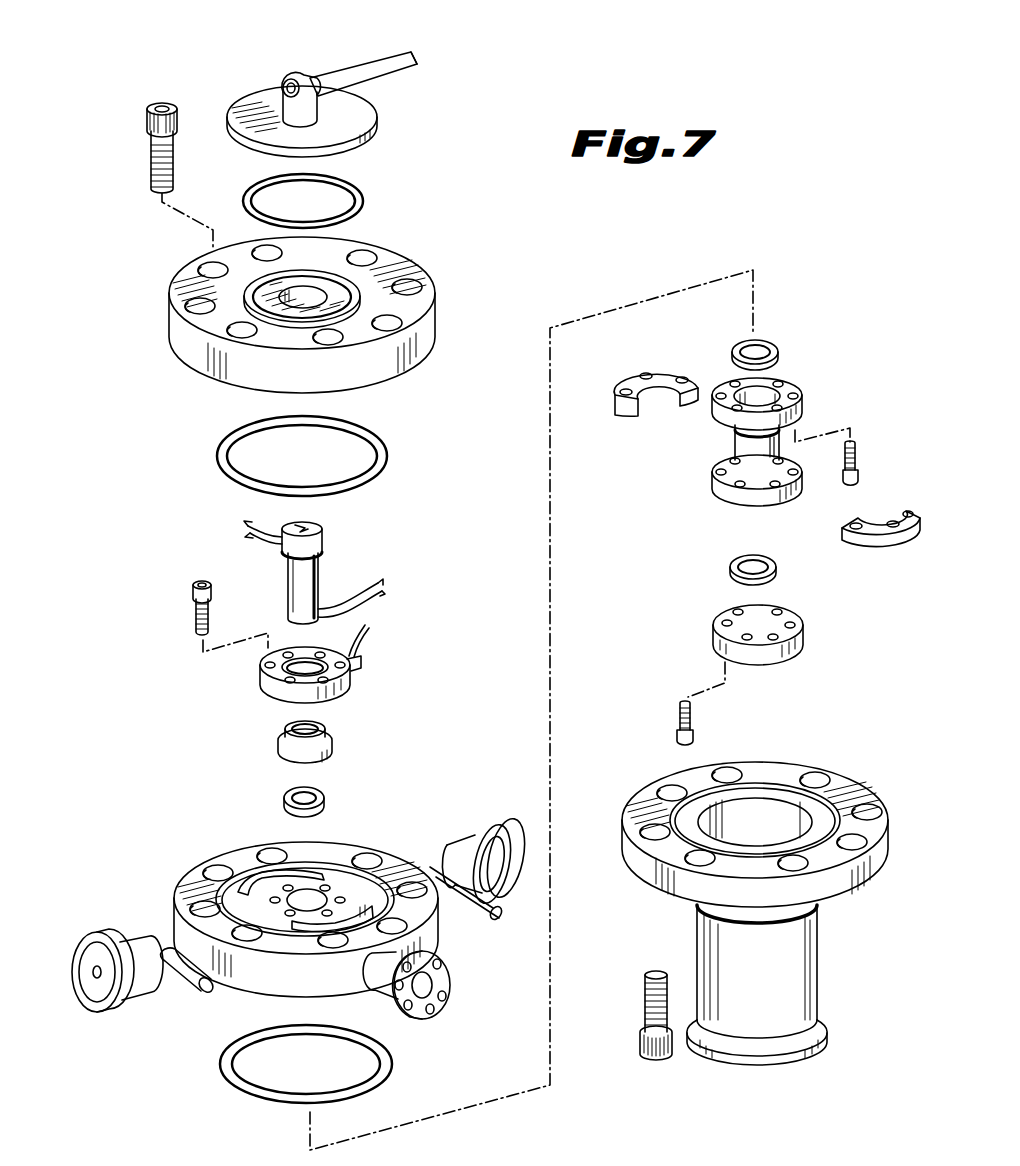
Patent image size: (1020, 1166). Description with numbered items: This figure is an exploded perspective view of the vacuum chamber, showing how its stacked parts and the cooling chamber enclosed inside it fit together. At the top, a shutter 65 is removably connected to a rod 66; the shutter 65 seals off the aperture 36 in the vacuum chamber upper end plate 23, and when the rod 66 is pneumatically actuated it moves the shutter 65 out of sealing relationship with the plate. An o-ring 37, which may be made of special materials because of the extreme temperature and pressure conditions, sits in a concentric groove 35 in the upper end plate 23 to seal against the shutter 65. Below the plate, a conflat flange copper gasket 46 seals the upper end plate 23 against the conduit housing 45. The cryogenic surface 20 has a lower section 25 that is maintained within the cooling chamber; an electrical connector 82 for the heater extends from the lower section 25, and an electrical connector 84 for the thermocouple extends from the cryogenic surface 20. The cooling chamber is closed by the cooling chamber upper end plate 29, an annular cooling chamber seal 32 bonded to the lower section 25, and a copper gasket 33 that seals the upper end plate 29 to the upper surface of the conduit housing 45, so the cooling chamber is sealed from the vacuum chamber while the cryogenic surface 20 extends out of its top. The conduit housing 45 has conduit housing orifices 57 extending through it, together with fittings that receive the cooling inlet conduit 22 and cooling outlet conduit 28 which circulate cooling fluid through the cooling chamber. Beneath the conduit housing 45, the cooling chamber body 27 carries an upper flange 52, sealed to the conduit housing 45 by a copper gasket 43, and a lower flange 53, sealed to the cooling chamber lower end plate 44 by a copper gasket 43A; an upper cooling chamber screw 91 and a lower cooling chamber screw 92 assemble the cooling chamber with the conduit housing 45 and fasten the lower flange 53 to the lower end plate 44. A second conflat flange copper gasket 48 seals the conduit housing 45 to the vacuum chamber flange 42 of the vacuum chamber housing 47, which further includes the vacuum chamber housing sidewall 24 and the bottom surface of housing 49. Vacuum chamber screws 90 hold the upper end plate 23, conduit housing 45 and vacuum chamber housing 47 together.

The cryogenic surface 20 is at (322, 540).
The cooling inlet conduit 22 is at (112, 935).
The vacuum chamber upper end plate 23 is at (317, 313).
The vacuum chamber housing sidewall 24 is at (818, 972).
The lower section of the cryogenic surface 25 is at (320, 578).
The cooling chamber body 27 is at (767, 440).
The cooling outlet conduit 28 is at (455, 843).
The cooling chamber upper end plate 29 is at (355, 686).
The annular cooling chamber seal 32 is at (335, 742).
The copper gasket 33 is at (325, 800).
The concentric groove 35 is at (353, 292).
The aperture 36 is at (347, 292).
The o-ring 37 is at (362, 195).
The vacuum chamber flange 42 is at (880, 800).
The copper gasket 43 is at (778, 348).
The copper gasket 43A is at (730, 567).
The cooling chamber lower end plate 44 is at (798, 650).
The conduit housing 45 is at (341, 890).
The conflat flange copper gasket 46 is at (385, 456).
The vacuum chamber housing 47 is at (840, 925).
The conflat flange copper gasket 48 is at (390, 1068).
The bottom surface of housing 49 is at (798, 1063).
The cooling chamber body upper flange 52 is at (802, 408).
The cooling chamber body lower flange 53 is at (727, 495).
The conduit housing orifice 57 is at (262, 882).
The shutter 65 is at (362, 118).
The rod 66 is at (383, 56).
The electrical connector 82 is at (384, 587).
The electrical connector 84 is at (240, 532).
The vacuum chamber screws 90 is at (150, 148).
The upper cooling chamber screw 91 is at (193, 606).
The lower cooling chamber screw 92 is at (858, 456).